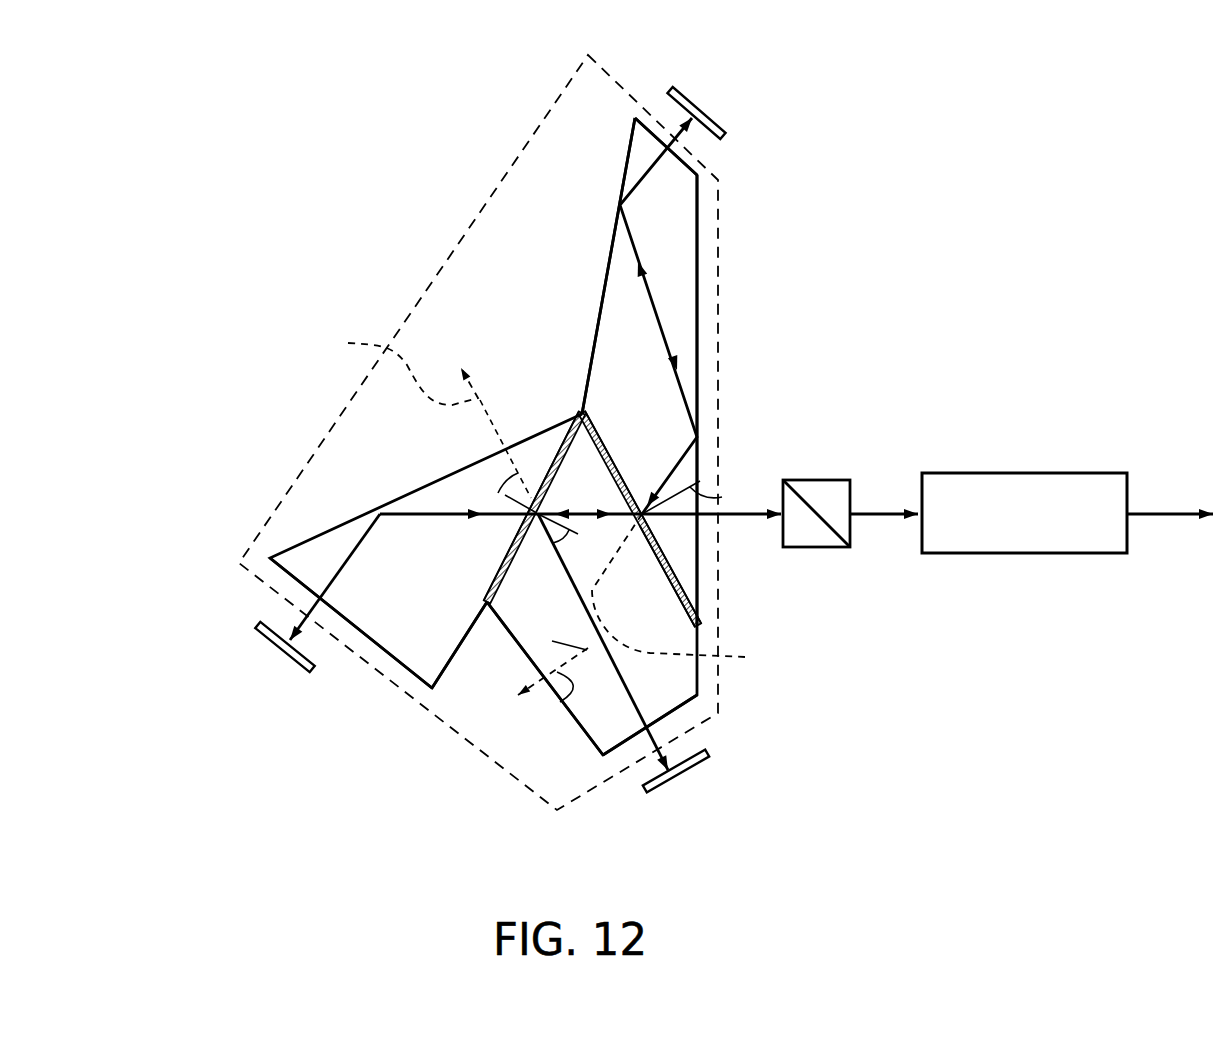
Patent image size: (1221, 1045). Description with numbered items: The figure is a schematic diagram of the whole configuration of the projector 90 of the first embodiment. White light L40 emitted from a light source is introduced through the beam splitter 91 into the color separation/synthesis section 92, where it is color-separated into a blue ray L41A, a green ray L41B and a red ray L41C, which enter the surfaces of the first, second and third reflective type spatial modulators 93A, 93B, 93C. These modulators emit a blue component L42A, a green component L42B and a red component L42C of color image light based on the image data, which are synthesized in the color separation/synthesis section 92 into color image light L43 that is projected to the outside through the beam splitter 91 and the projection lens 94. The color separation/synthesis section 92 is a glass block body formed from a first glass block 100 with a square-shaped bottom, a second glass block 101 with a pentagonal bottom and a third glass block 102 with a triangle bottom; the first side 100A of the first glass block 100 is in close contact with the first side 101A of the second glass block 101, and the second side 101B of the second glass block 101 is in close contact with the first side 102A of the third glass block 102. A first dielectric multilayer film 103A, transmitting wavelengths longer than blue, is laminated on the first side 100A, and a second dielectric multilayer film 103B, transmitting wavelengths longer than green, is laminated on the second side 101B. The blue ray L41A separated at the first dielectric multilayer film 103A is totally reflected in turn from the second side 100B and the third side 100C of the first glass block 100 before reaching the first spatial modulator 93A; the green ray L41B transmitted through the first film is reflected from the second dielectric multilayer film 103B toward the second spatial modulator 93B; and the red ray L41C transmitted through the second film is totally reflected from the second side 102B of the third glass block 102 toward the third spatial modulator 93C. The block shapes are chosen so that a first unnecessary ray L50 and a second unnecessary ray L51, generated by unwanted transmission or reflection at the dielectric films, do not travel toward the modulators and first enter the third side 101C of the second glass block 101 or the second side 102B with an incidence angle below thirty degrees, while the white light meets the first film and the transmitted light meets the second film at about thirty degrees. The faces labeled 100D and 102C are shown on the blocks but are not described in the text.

The projector 90 is at (1072, 747).
The beam splitter 91 is at (833, 480).
The color separation/synthesis section 92 is at (487, 203).
The first reflective type spatial modulator 93A is at (722, 126).
The second reflective type spatial modulator 93B is at (710, 764).
The third reflective type spatial modulator 93C is at (287, 662).
The projection lens 94 is at (1022, 473).
The first glass block 100 is at (688, 228).
The first side of the first glass block 100A is at (585, 402).
The second side of the first glass block 100B is at (696, 270).
The third side of the first glass block 100C is at (604, 300).
The prism surface 100D is at (684, 172).
The second glass block 101 is at (698, 690).
The first side of the second glass block 101A is at (672, 610).
The second side of the second glass block 101B is at (508, 585).
The third side of the second glass block 101C is at (575, 690).
The third glass block 102 is at (447, 500).
The first side of the third glass block 102A is at (461, 628).
The second side of the third glass block 102B is at (540, 470).
The prism surface 102C is at (388, 652).
The first dielectric multilayer film 103A is at (678, 597).
The second dielectric multilayer film 103B is at (597, 416).
The white light L40 is at (768, 518).
The blue ray L41A is at (668, 328).
The green ray L41B is at (603, 768).
The red ray L41C is at (340, 567).
The blue component of color image light L42A is at (755, 316).
The green component of color image light L42B is at (601, 696).
The red component of color image light L42C is at (254, 543).
The color image light L43 is at (800, 526).
The first unnecessary ray L50 is at (654, 604).
The second unnecessary ray L51 is at (391, 364).